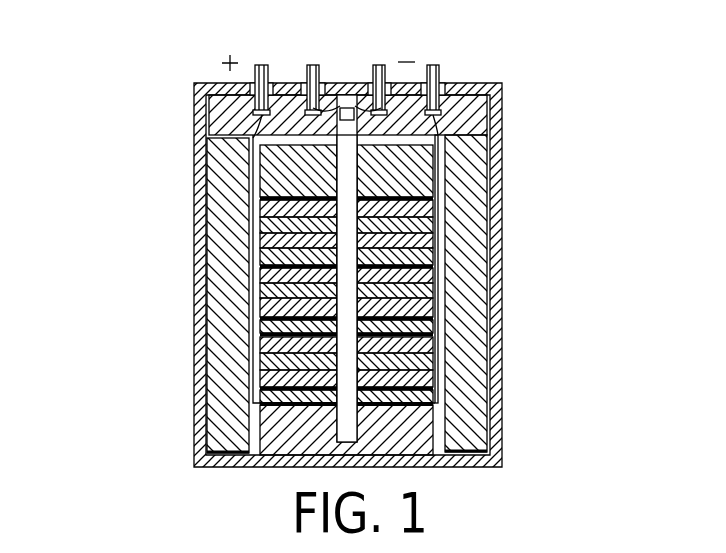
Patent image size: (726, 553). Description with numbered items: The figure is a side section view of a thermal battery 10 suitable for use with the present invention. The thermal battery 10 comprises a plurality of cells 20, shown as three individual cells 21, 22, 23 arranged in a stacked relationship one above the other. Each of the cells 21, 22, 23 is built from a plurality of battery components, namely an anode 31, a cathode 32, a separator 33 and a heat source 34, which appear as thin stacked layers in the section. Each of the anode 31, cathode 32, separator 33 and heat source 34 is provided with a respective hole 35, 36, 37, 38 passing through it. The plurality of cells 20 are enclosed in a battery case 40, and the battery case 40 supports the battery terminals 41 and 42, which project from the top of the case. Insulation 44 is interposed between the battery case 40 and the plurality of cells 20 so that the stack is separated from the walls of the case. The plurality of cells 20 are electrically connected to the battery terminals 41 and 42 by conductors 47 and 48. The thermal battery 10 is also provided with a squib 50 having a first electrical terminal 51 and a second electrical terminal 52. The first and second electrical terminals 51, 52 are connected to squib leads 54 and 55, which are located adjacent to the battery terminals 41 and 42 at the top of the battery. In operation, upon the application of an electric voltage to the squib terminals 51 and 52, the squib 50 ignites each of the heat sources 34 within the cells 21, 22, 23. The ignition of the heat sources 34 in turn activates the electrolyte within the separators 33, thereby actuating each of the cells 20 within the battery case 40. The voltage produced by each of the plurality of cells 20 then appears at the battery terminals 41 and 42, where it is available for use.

The thermal battery 10 is at (100, 67).
The plurality of cells 20 is at (543, 144).
The cell 21 is at (440, 226).
The cell 22 is at (440, 303).
The cell 23 is at (443, 372).
The anode 31 is at (433, 243).
The cathode 32 is at (260, 217).
The separator 33 is at (433, 224).
The heat source 34 is at (260, 254).
The hole 35 is at (356, 250).
The hole 36 is at (260, 227).
The hole 37 is at (356, 214).
The hole 38 is at (260, 242).
The battery case 40 is at (200, 461).
The battery terminal 41 is at (437, 63).
The battery terminal 42 is at (262, 63).
The insulation 44 is at (213, 175).
The conductor 47 is at (205, 158).
The conductor 48 is at (448, 141).
The squib 50 is at (347, 105).
The first electrical terminal 51 is at (313, 62).
The second electrical terminal 52 is at (378, 62).
The squib lead 54 is at (334, 100).
The squib lead 55 is at (361, 100).